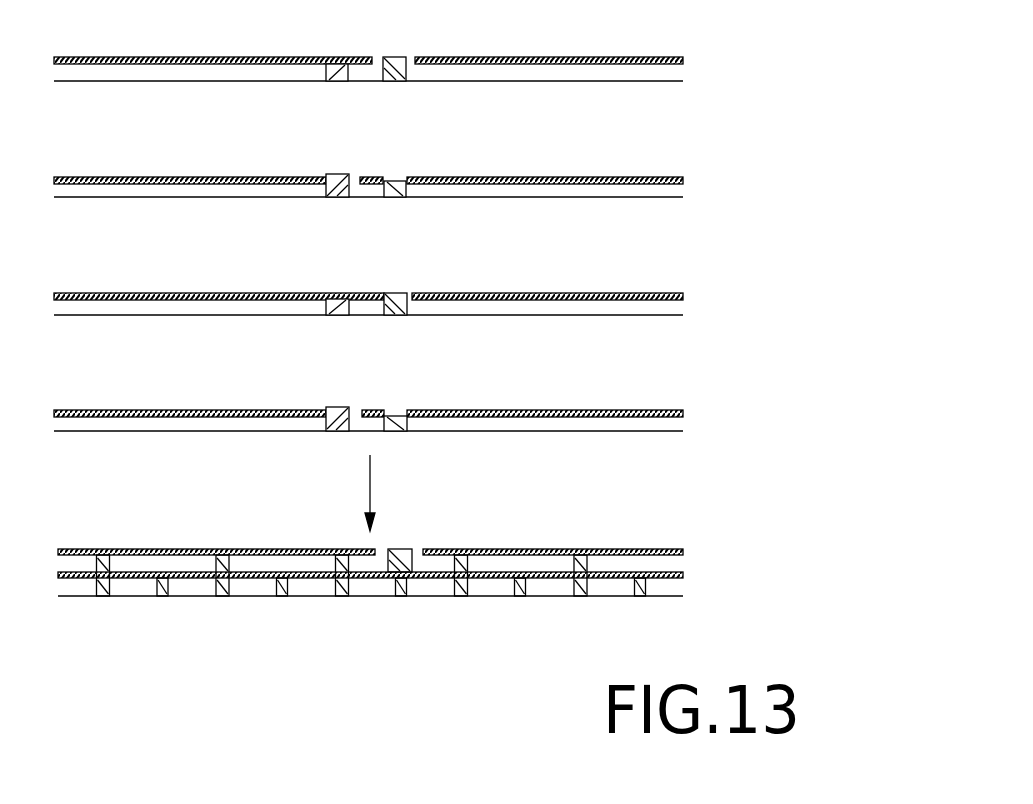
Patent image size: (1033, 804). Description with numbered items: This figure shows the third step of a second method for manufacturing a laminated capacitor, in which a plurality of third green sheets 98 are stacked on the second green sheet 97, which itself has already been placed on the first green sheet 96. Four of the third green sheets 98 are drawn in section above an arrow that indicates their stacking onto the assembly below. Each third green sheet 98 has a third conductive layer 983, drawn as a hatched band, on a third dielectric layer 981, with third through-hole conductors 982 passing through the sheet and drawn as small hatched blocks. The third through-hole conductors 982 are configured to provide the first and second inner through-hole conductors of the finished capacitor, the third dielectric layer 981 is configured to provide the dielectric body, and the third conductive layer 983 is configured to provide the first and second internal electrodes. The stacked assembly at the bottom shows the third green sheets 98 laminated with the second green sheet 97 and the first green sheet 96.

The third green sheet 98 is at (394, 245).
The third dielectric layer 981 is at (93, 79).
The third through-hole conductors 982 is at (340, 80).
The third conductive layer 983 is at (183, 57).
The second green sheet 97 is at (684, 560).
The first green sheet 96 is at (684, 585).